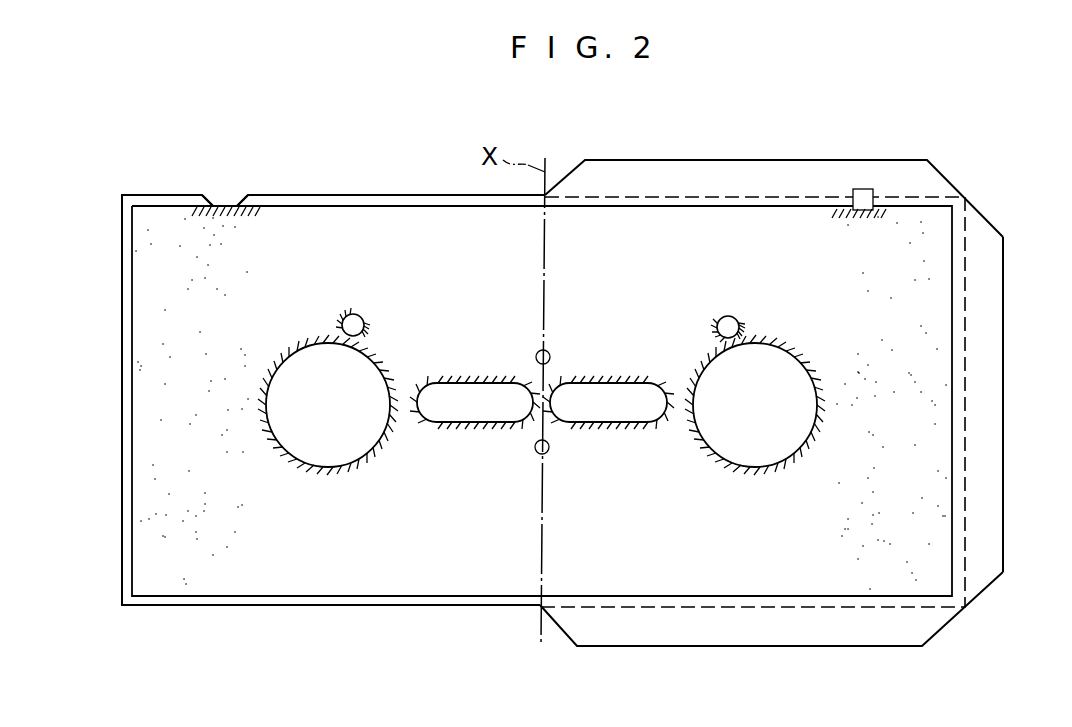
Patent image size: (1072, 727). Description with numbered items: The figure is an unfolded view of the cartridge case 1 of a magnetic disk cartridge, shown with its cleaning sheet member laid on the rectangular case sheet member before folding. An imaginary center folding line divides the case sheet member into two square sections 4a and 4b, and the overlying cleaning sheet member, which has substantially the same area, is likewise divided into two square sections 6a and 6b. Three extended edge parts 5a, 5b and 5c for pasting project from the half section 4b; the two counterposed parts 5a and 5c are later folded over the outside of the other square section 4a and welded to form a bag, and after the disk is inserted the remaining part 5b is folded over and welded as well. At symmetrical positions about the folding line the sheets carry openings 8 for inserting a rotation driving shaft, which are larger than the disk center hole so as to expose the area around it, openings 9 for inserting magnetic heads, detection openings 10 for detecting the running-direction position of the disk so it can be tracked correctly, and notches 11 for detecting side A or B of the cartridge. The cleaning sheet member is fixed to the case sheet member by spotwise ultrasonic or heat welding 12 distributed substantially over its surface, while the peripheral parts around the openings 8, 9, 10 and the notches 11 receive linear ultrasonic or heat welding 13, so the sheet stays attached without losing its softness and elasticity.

The cartridge case 1 is at (387, 200).
The square section 4a is at (458, 604).
The half section 4b is at (635, 606).
The extended edge part 5a is at (754, 178).
The extended edge part 5b is at (990, 406).
The extended edge part 5c is at (718, 634).
The square section 6a is at (357, 586).
The square section 6b is at (808, 586).
The opening for inserting a rotation driving shaft 8 is at (293, 445).
The opening for inserting magnetic heads 9 is at (434, 419).
The detection opening 10 is at (352, 316).
The notch 11 is at (226, 200).
The spotwise ultrasonic or heat welding 12 is at (140, 497).
The linear ultrasonic or heat welding 13 is at (250, 208).